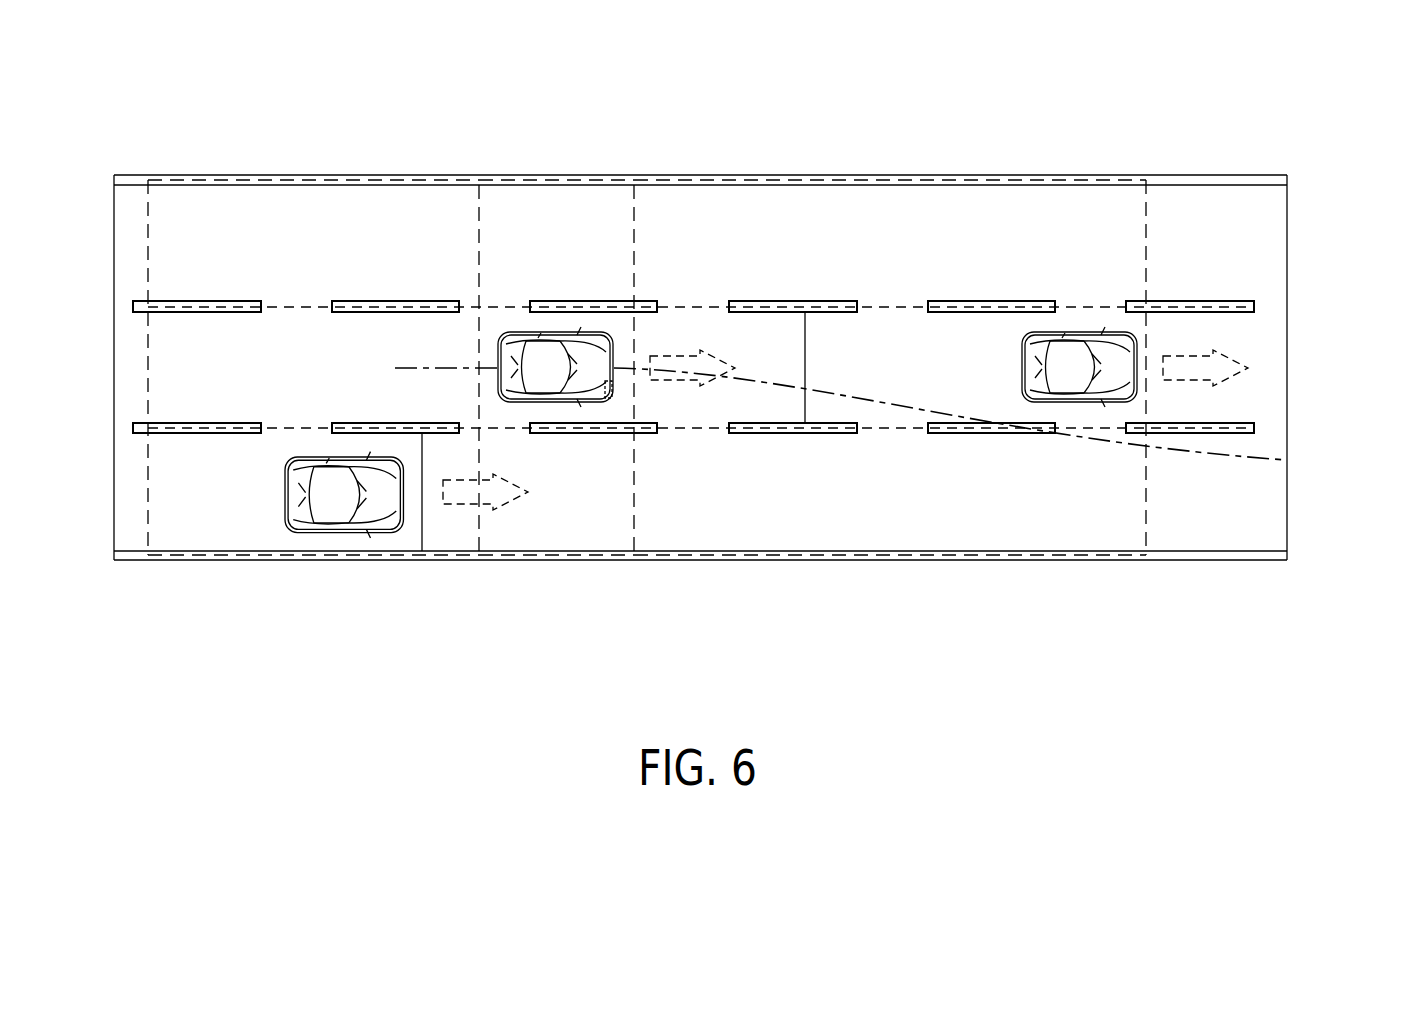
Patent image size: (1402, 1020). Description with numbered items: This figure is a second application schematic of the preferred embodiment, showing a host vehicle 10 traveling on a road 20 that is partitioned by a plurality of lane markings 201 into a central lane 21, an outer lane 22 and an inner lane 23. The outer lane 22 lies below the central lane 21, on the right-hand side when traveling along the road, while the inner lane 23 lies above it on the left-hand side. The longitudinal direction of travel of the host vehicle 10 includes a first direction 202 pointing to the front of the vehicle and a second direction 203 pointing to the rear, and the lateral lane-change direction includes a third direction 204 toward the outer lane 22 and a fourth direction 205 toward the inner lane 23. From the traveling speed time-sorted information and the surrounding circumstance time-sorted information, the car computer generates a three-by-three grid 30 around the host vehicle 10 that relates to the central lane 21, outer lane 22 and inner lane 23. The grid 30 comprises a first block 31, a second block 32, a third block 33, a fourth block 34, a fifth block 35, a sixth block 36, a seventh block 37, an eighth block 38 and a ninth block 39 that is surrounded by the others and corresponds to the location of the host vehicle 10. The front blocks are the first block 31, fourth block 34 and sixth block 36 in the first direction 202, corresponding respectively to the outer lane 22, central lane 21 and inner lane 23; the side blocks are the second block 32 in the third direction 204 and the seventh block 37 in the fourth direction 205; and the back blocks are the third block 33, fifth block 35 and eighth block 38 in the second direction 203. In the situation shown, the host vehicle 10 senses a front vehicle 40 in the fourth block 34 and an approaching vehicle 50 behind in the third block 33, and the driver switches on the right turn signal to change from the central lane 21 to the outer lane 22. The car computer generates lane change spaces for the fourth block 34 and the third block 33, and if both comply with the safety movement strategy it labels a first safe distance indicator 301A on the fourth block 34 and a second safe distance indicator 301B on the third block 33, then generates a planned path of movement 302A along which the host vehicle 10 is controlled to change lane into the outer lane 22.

The host vehicle 10 is at (545, 377).
The road 20 is at (1235, 222).
The central lane 21 is at (1175, 395).
The outer lane 22 is at (1263, 528).
The inner lane 23 is at (1205, 205).
The lane markings 201 is at (1213, 430).
The first direction 202 is at (1293, 467).
The second direction 203 is at (102, 482).
The third direction 204 is at (685, 580).
The fourth direction 205 is at (685, 152).
The 3×3 grid 30 is at (147, 252).
The first block 31 is at (955, 527).
The second block 32 is at (597, 527).
The third block 33 is at (235, 527).
The fourth block 34 is at (888, 410).
The fifth block 35 is at (173, 403).
The sixth block 36 is at (895, 205).
The seventh block 37 is at (553, 205).
The eighth block 38 is at (278, 205).
The ninth block 39 is at (508, 320).
The front vehicle 40 is at (1070, 378).
The approaching vehicle 50 is at (345, 507).
The first safe distance indicator 301A is at (805, 352).
The second safe distance indicator 301B is at (422, 525).
The travel path 302A is at (858, 396).